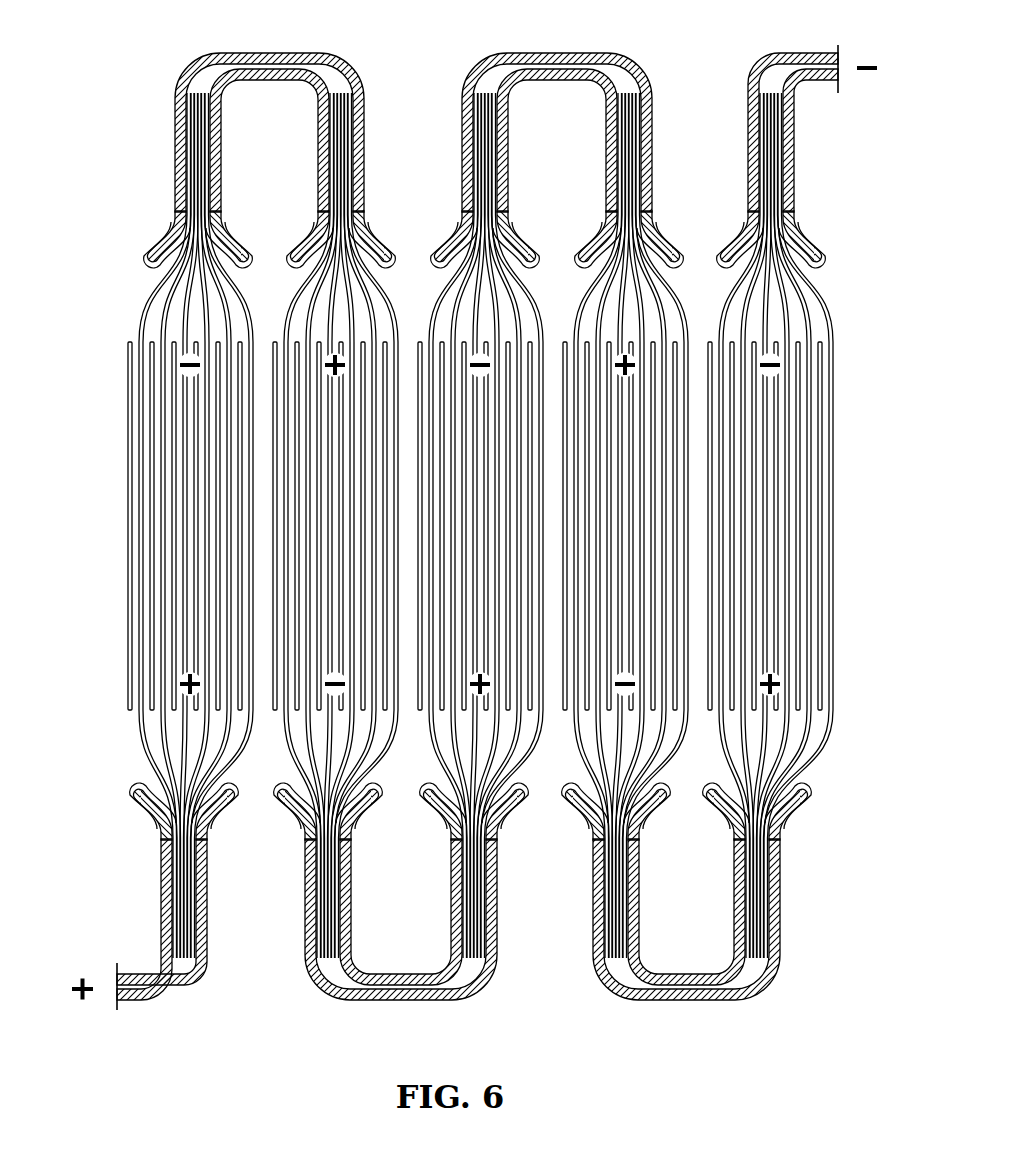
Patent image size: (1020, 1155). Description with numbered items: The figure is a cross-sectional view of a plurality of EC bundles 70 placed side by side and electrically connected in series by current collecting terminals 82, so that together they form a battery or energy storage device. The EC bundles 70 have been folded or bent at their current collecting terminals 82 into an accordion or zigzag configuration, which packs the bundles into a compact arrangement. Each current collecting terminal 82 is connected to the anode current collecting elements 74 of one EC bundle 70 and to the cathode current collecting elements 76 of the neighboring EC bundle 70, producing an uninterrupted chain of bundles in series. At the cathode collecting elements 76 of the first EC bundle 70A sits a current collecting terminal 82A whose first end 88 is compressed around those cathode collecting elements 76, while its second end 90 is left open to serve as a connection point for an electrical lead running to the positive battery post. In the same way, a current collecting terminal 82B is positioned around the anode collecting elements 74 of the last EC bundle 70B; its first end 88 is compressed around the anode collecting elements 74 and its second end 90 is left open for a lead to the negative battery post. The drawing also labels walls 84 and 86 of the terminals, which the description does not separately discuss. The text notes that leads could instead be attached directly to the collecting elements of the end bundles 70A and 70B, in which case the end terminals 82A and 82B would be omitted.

The EC bundle 70 is at (391, 521).
The first EC bundle 70A is at (154, 523).
The last EC bundle 70B is at (802, 481).
The anode current collecting elements 74 is at (188, 160).
The cathode current collecting elements 76 is at (350, 167).
The current collecting terminal 82 is at (267, 52).
The current collecting terminal 82A is at (153, 947).
The current collecting terminal 82B is at (820, 52).
The outer conductive wall 84 is at (797, 202).
The inner conductive wall 86 is at (748, 200).
The first end 88 is at (757, 132).
The second end 90 is at (163, 983).